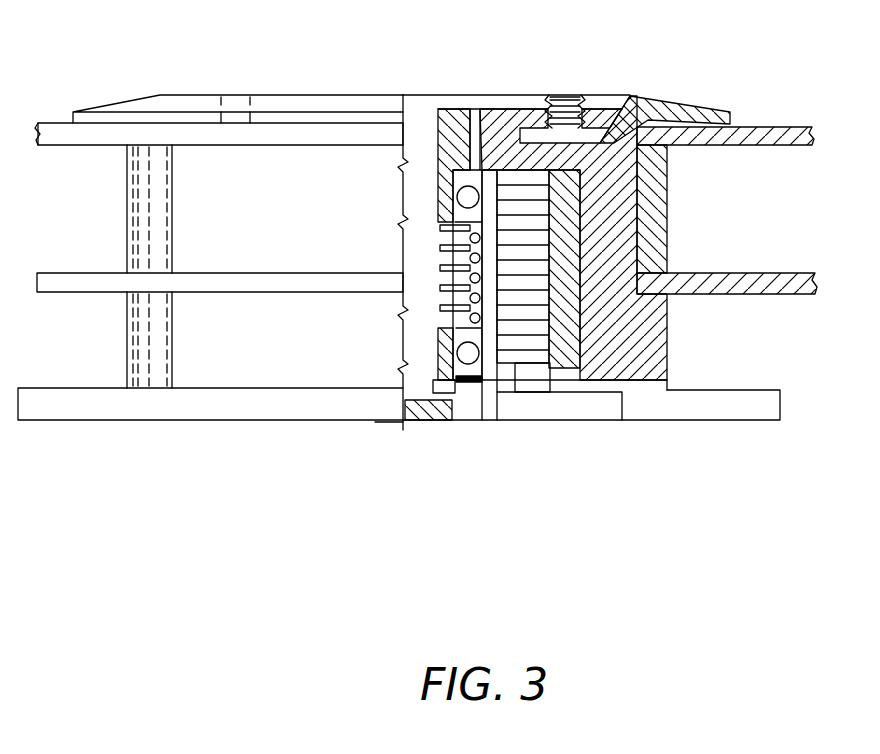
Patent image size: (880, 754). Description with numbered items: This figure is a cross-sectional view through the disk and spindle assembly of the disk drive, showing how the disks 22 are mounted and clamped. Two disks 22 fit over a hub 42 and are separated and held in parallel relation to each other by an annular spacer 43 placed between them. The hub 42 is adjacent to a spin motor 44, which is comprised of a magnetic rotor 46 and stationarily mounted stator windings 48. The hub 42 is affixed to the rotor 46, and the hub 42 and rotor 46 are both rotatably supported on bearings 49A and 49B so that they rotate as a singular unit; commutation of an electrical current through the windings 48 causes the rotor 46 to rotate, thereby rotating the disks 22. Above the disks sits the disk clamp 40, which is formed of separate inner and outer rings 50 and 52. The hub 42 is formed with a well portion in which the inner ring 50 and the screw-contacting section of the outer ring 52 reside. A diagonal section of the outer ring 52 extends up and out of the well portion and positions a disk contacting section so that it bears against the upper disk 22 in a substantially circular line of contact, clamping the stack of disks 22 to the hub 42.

The disks 22 is at (795, 147).
The disk clamp 40 is at (598, 85).
The hub 42 is at (668, 327).
The annular spacer 43 is at (663, 229).
The spin motor 44 is at (515, 450).
The magnetic rotor 46 is at (570, 358).
The stator windings 48 is at (534, 355).
The bearing 49A is at (467, 186).
The bearing 49B is at (473, 365).
The inner ring 50 is at (540, 100).
The outer ring 52 is at (706, 102).